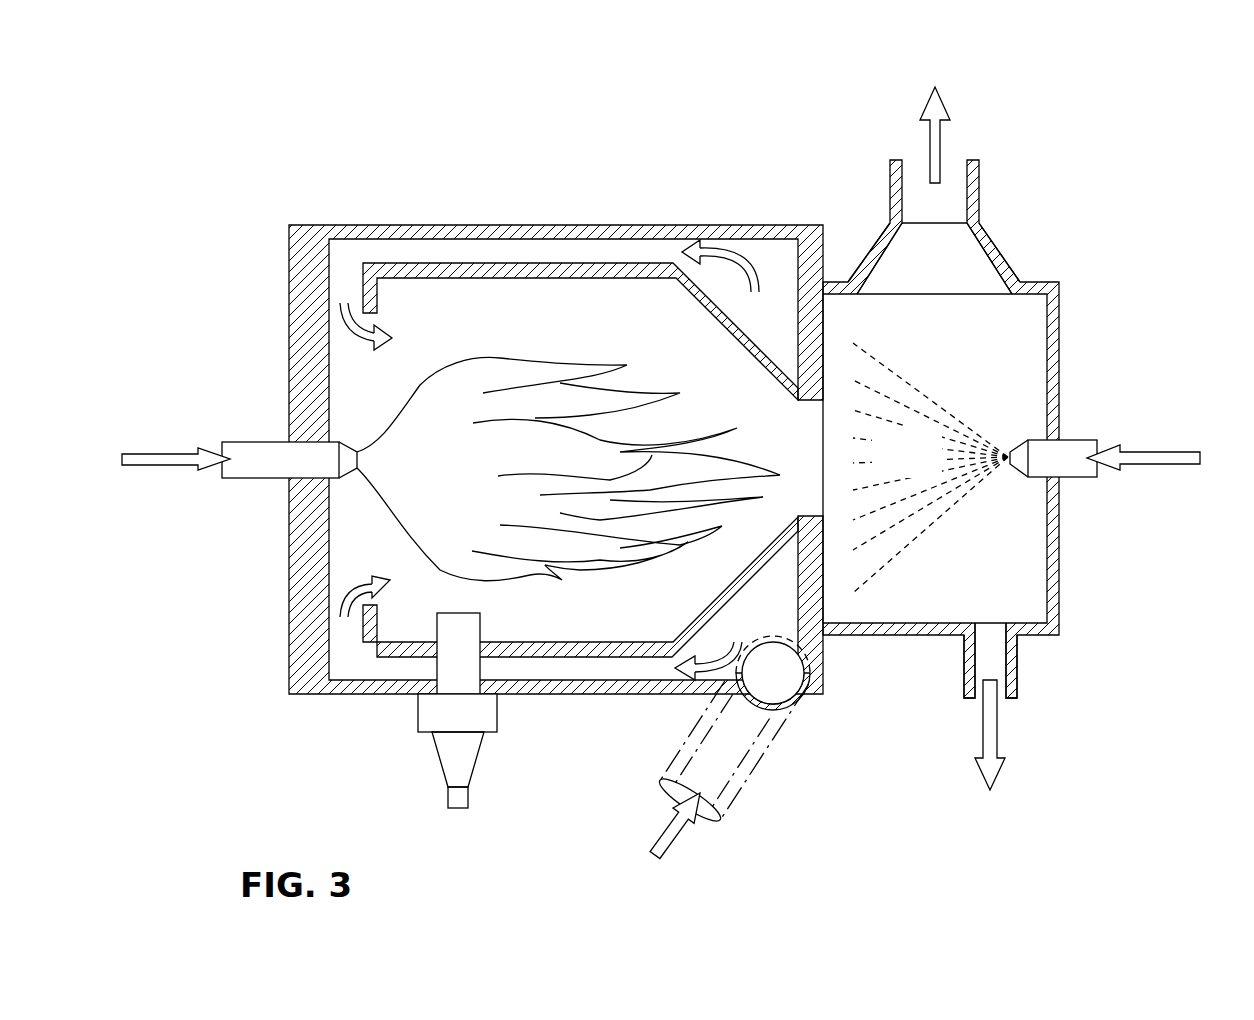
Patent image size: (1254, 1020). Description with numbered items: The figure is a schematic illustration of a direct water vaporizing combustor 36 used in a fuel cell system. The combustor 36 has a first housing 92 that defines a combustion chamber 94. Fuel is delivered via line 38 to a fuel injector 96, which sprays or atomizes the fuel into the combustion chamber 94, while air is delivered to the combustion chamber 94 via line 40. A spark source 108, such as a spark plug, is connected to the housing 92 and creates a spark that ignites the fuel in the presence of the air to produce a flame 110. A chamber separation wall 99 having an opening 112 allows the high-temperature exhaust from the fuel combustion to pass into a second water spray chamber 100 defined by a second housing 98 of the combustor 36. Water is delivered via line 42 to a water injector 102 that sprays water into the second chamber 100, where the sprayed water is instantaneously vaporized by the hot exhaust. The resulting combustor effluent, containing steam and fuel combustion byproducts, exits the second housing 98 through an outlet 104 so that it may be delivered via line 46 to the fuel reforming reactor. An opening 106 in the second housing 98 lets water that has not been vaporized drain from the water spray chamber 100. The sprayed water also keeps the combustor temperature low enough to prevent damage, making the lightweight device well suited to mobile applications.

The direct water vaporizing combustor 36 is at (376, 156).
The fuel line 38 is at (160, 455).
The air line 40 is at (742, 768).
The water line 42 is at (1160, 450).
The effluent line 46 is at (942, 140).
The first housing 92 is at (554, 224).
The combustion chamber 94 is at (648, 296).
The fuel injector 96 is at (256, 458).
The second housing 98 is at (1054, 520).
The chamber separation wall 99 is at (812, 515).
The second (water spray) chamber 100 is at (1038, 359).
The water injector 102 is at (1066, 445).
The outlet 104 is at (960, 252).
The opening 106 is at (988, 630).
The spark source 108 is at (455, 662).
The flame 110 is at (472, 372).
The opening 112 is at (822, 497).